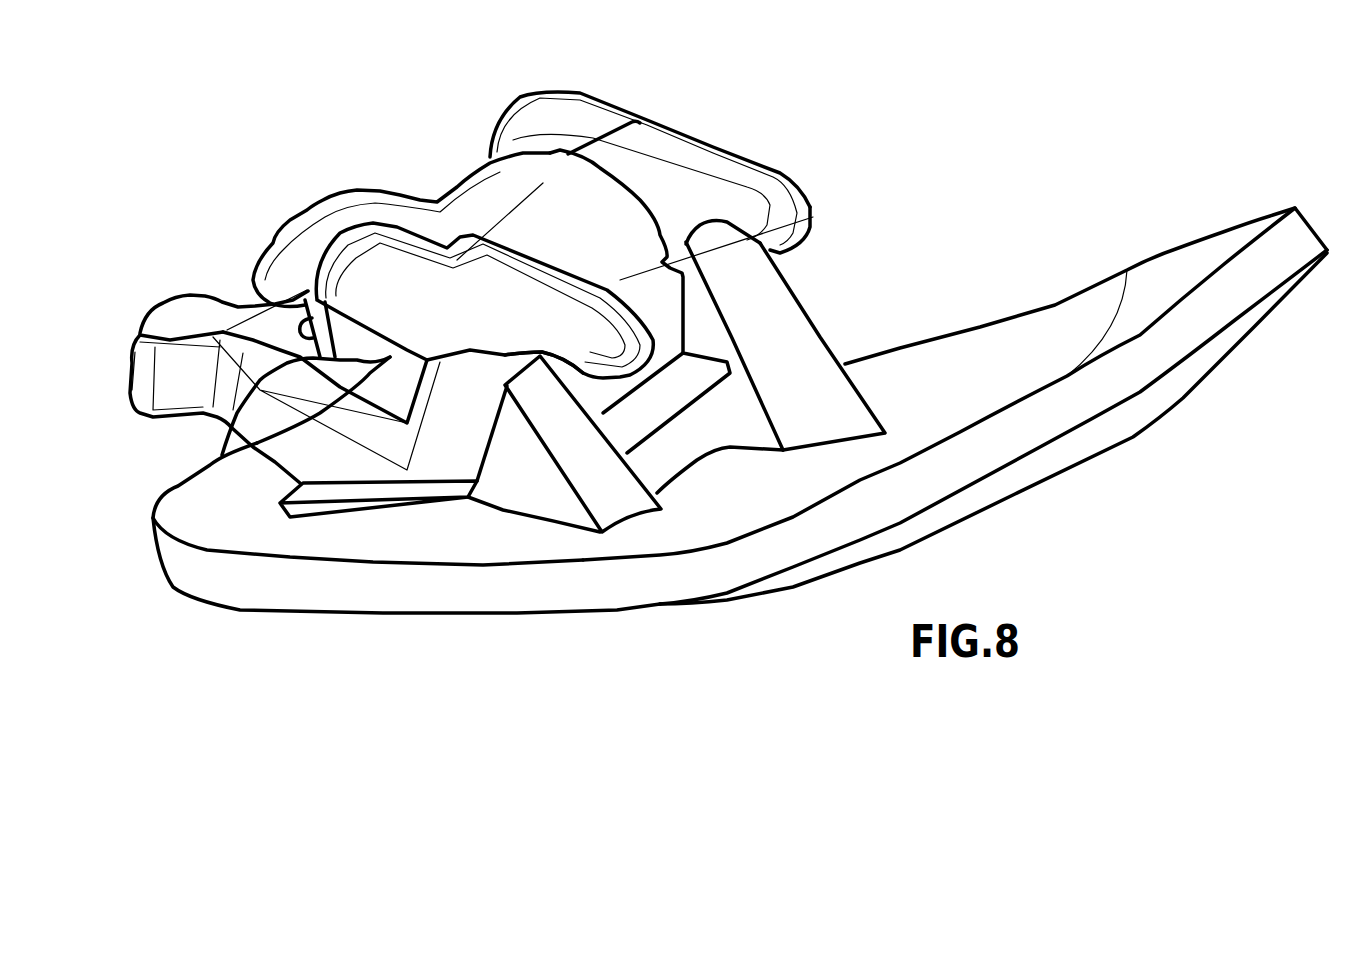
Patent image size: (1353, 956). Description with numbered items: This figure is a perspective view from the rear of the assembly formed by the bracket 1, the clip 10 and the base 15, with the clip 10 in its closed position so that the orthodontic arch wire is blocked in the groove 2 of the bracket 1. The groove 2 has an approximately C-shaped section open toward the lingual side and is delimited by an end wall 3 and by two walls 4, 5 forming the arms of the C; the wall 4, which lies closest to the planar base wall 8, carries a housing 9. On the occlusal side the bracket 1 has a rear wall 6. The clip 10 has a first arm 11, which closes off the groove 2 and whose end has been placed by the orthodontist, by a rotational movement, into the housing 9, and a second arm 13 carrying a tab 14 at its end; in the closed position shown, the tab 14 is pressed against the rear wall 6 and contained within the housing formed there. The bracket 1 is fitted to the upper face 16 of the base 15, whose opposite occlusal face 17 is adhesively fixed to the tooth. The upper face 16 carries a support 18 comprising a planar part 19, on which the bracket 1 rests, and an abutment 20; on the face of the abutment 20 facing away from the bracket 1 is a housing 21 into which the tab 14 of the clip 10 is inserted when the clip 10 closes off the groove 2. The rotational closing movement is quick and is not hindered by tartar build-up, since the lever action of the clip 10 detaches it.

The bracket 1 is at (132, 292).
The groove 2 is at (390, 373).
The end wall 3 is at (417, 410).
The wall 4 is at (227, 420).
The wall 5 is at (307, 283).
The rear wall 6 is at (510, 363).
The base wall 8 is at (347, 503).
The housing 9 is at (258, 440).
The clip 10 is at (590, 197).
The first arm 11 is at (337, 317).
The second arm 13 is at (810, 213).
The tab 14 is at (668, 310).
The base 15 is at (1070, 502).
The upper face 16 is at (1015, 343).
The occlusal face 17 is at (1160, 397).
The support 18 is at (237, 575).
The planar part 19 is at (197, 502).
The abutment 20 is at (814, 364).
The housing 21 is at (687, 290).